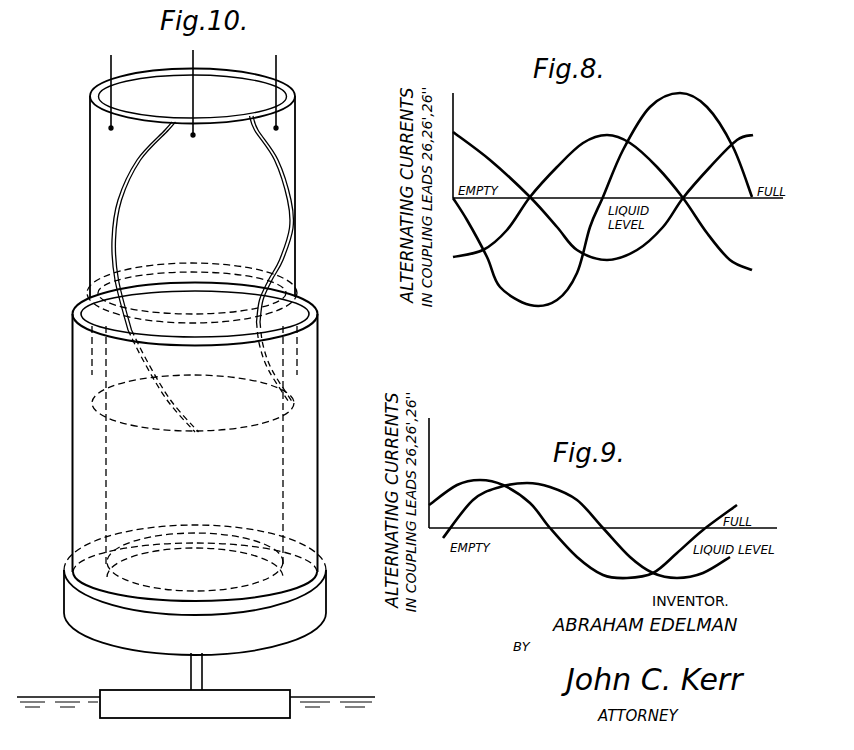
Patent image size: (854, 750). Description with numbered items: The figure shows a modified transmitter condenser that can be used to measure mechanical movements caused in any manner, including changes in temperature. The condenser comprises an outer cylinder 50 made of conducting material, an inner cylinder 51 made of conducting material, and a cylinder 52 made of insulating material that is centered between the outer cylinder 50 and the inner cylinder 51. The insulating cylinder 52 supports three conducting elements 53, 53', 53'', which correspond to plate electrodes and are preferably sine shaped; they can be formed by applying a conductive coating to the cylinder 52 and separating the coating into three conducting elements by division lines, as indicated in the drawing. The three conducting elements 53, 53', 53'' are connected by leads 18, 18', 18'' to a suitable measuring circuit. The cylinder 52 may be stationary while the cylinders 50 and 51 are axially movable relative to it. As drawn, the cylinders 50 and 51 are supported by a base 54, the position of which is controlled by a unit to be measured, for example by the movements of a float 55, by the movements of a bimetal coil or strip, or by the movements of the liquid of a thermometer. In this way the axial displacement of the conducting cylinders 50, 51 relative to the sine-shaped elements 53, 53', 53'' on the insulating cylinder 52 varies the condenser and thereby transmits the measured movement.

The lead 18 is at (126, 90).
The lead 18' is at (210, 91).
The lead 18'' is at (295, 88).
The outer cylinder 50 is at (318, 373).
The inner cylinder 51 is at (284, 476).
The insulating cylinder 52 is at (295, 85).
The conducting element 53 is at (174, 263).
The conducting element 53' is at (224, 277).
The conducting element 53'' is at (298, 259).
The base 54 is at (70, 594).
The float 55 is at (137, 672).